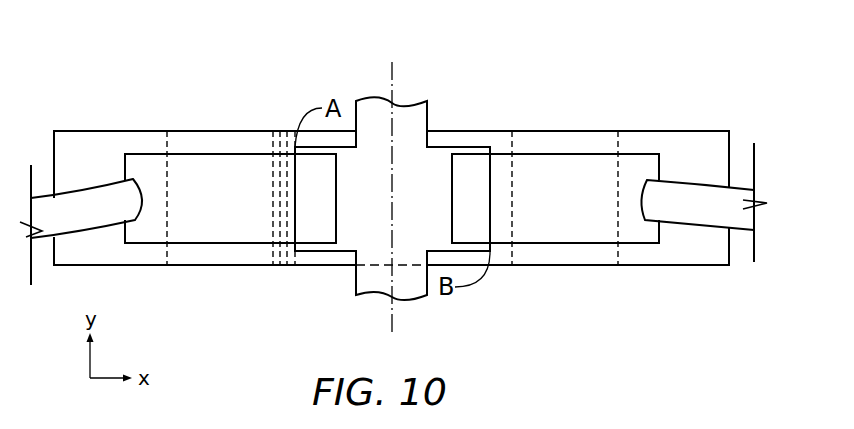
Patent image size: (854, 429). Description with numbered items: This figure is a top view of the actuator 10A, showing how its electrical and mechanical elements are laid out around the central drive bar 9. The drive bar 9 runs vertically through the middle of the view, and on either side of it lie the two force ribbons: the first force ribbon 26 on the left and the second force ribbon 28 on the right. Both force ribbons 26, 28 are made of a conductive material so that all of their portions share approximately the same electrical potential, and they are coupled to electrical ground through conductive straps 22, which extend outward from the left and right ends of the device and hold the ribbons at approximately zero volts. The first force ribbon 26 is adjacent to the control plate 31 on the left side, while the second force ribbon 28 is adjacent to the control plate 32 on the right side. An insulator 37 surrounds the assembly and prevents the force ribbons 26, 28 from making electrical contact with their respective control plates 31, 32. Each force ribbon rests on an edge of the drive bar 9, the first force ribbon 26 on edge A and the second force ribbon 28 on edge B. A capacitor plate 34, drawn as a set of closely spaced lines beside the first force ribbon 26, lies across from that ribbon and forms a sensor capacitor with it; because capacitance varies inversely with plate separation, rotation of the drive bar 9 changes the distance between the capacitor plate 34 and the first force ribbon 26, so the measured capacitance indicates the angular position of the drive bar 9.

The actuator 10A is at (127, 95).
The conductive straps 22 is at (73, 230).
The first force ribbon 26 is at (320, 213).
The second force ribbon 28 is at (477, 213).
The control plate 31 is at (210, 252).
The control plate 32 is at (574, 198).
The capacitor plate 34 is at (283, 255).
The insulator 37 is at (682, 150).
The drive bar 9 is at (410, 118).